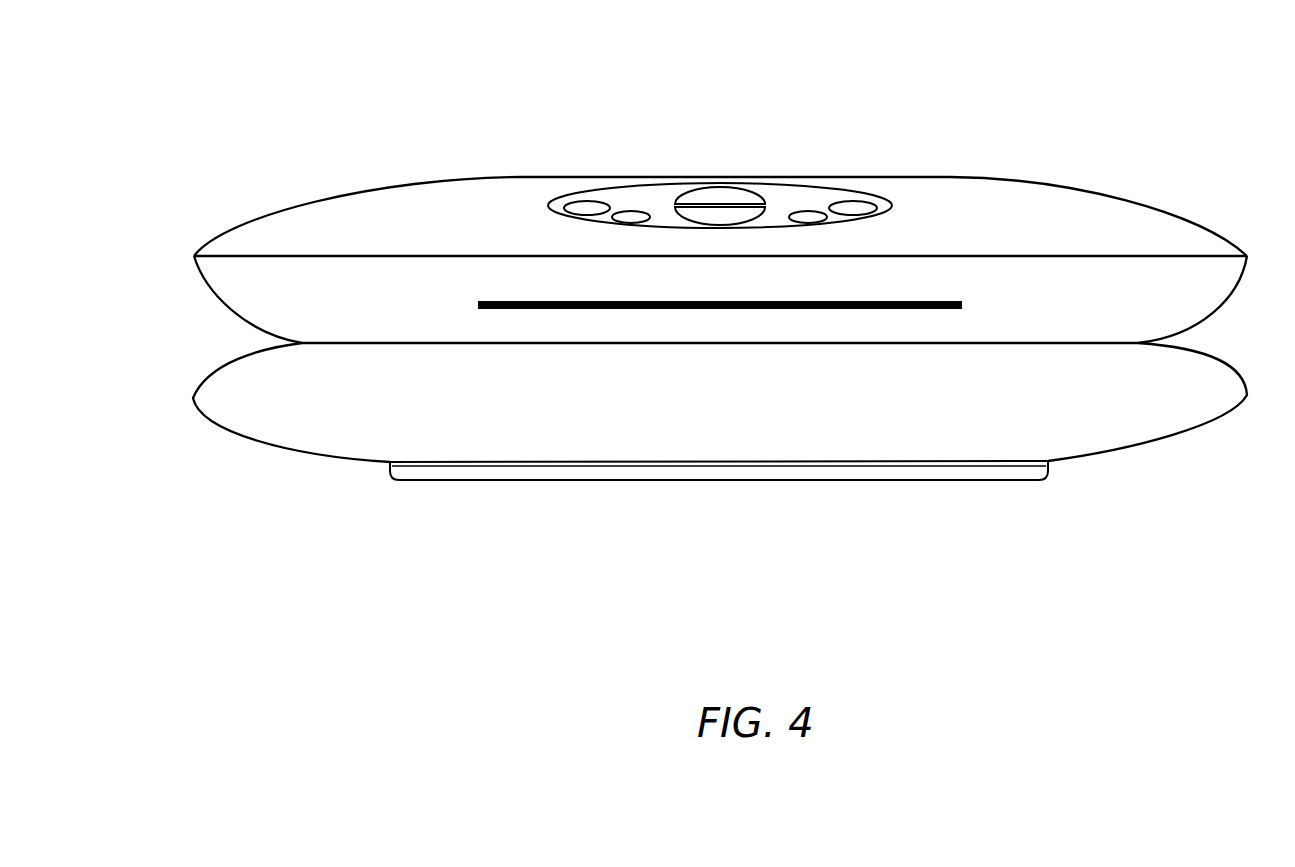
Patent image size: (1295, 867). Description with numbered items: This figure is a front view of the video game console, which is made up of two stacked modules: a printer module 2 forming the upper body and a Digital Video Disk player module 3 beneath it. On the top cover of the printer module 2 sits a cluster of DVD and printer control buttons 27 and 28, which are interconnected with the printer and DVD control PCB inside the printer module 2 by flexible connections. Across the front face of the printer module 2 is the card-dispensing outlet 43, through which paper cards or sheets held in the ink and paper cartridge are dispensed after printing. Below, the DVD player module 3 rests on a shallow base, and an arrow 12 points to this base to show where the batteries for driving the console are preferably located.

The printer module 2 is at (1168, 225).
The Digital Video Disk (DVD) player module 3 is at (1180, 377).
The arrow indicating battery location 12 is at (810, 482).
The DVD control button 27 is at (802, 192).
The printer control button 28 is at (643, 200).
The card-dispensing outlet 43 is at (480, 305).